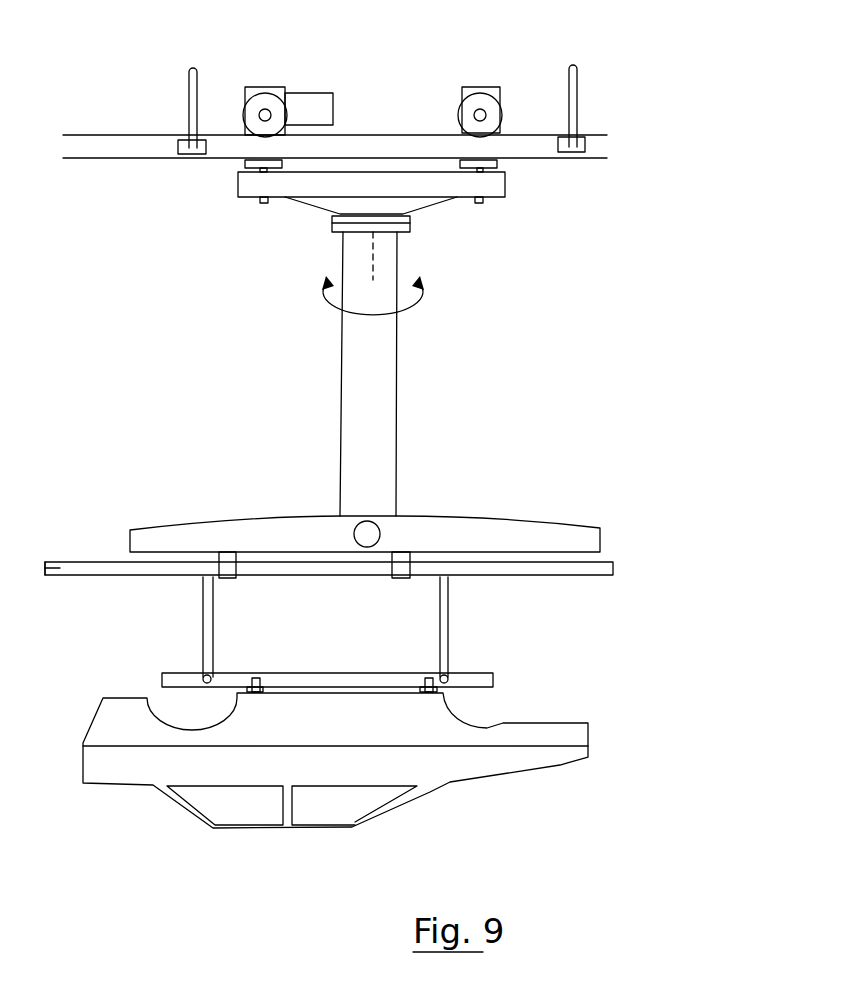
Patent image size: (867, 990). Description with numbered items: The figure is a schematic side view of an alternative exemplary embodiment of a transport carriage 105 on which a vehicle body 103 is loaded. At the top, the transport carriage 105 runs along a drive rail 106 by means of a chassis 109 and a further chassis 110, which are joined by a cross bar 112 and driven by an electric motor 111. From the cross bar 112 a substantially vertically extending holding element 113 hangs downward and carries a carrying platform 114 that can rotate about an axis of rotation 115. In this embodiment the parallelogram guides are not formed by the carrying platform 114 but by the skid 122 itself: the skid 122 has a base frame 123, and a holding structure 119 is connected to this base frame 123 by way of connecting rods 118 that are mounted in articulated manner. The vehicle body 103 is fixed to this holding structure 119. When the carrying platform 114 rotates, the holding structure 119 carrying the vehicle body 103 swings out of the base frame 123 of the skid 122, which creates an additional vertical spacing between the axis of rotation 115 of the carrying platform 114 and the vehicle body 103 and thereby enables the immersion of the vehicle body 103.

The vehicle body 103 is at (373, 805).
The transport carriage 105 is at (372, 188).
The drive rail 106 is at (95, 147).
The chassis 109 is at (278, 87).
The further chassis 110 is at (480, 90).
The electric motor 111 is at (313, 107).
The cross bar 112 is at (443, 188).
The holding element 113 is at (388, 373).
The carrying platform 114 is at (492, 522).
The axis of rotation 115 is at (343, 533).
The connecting rods 118 is at (203, 618).
The holding structure 119 is at (312, 678).
The skid 122 is at (99, 575).
The base frame 123 is at (62, 567).